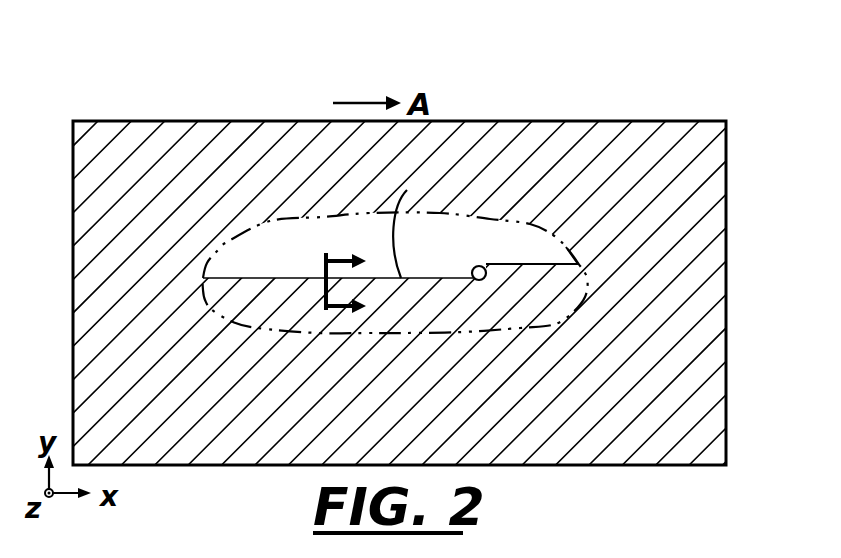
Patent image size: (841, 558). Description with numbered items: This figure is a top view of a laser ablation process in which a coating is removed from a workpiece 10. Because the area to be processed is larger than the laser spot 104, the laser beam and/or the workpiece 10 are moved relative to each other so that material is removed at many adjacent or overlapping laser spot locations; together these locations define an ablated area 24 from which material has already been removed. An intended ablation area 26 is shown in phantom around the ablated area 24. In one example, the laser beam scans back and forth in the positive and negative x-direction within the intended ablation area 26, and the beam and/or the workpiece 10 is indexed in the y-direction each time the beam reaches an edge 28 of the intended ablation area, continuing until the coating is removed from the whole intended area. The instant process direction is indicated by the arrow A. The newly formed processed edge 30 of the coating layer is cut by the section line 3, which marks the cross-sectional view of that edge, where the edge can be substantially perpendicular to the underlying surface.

The workpiece 10 is at (80, 100).
The ablated area 24 is at (328, 232).
The intended ablation area 26 is at (233, 240).
The edge of the intended ablation area 28 is at (233, 240).
The processed edge 30 is at (414, 219).
The laser spot 104 is at (472, 268).
The section line 3 is at (348, 287).